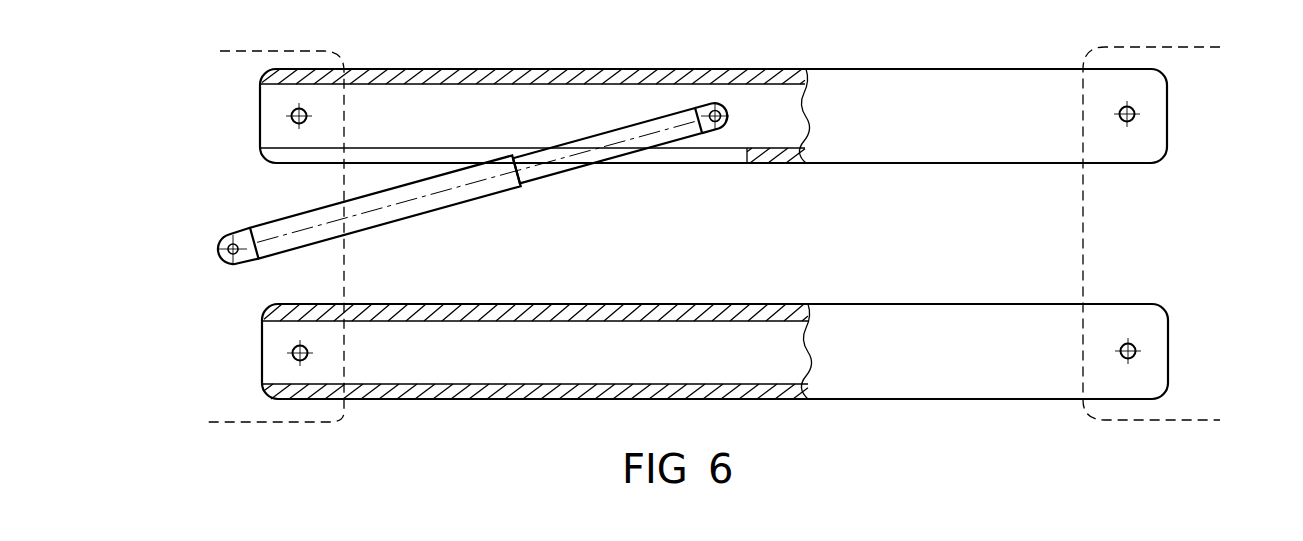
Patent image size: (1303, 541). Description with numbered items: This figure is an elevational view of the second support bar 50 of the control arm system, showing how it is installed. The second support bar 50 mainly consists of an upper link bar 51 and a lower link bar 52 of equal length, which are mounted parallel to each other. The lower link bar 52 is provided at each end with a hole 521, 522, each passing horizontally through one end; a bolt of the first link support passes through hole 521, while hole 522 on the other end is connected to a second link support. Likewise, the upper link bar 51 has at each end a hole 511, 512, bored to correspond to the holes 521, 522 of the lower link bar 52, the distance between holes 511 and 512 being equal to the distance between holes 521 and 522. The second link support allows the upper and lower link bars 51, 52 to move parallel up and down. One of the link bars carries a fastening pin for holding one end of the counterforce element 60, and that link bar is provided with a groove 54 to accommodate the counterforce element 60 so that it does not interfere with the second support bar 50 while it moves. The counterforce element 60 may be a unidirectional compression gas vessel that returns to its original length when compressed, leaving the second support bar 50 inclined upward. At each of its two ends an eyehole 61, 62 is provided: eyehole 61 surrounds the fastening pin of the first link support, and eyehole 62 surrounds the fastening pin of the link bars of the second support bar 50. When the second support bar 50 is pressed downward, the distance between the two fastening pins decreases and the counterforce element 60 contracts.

The second support bar 50 is at (430, 405).
The upper link bar 51 is at (952, 123).
The lower link bar 52 is at (902, 375).
The groove 54 is at (730, 158).
The counterforce element 60 is at (266, 212).
The eyehole 61 is at (217, 250).
The eyehole 62 is at (725, 118).
The hole 511 is at (287, 113).
The hole 512 is at (1137, 112).
The hole 521 is at (292, 353).
The hole 522 is at (1137, 356).